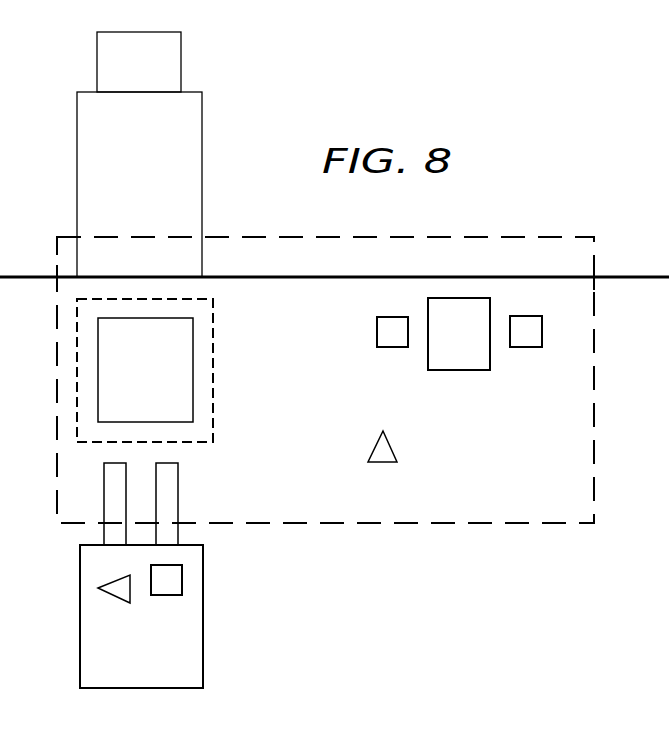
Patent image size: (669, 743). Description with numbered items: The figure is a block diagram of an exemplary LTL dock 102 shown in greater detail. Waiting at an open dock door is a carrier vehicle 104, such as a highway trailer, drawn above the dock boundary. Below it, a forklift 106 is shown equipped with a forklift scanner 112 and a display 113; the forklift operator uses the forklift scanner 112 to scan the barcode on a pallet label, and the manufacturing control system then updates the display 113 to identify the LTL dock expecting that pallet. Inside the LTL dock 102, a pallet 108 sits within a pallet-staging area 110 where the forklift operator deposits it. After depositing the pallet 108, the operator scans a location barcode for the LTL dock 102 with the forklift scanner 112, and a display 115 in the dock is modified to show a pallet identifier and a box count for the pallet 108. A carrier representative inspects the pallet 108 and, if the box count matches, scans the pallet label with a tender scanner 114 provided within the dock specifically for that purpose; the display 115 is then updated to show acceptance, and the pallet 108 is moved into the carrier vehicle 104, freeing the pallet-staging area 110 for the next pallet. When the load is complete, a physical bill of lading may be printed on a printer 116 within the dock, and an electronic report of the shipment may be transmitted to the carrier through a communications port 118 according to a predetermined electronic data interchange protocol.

The LTL dock 102 is at (345, 525).
The carrier vehicle 104 is at (77, 153).
The forklift 106 is at (80, 617).
The pallet 108 is at (160, 382).
The pallet-staging area 110 is at (213, 380).
The forklift scanner 112 is at (112, 603).
The display 113 is at (166, 595).
The tender scanner 114 is at (383, 464).
The display 115 is at (458, 371).
The printer 116 is at (526, 349).
The communications port 118 is at (392, 349).